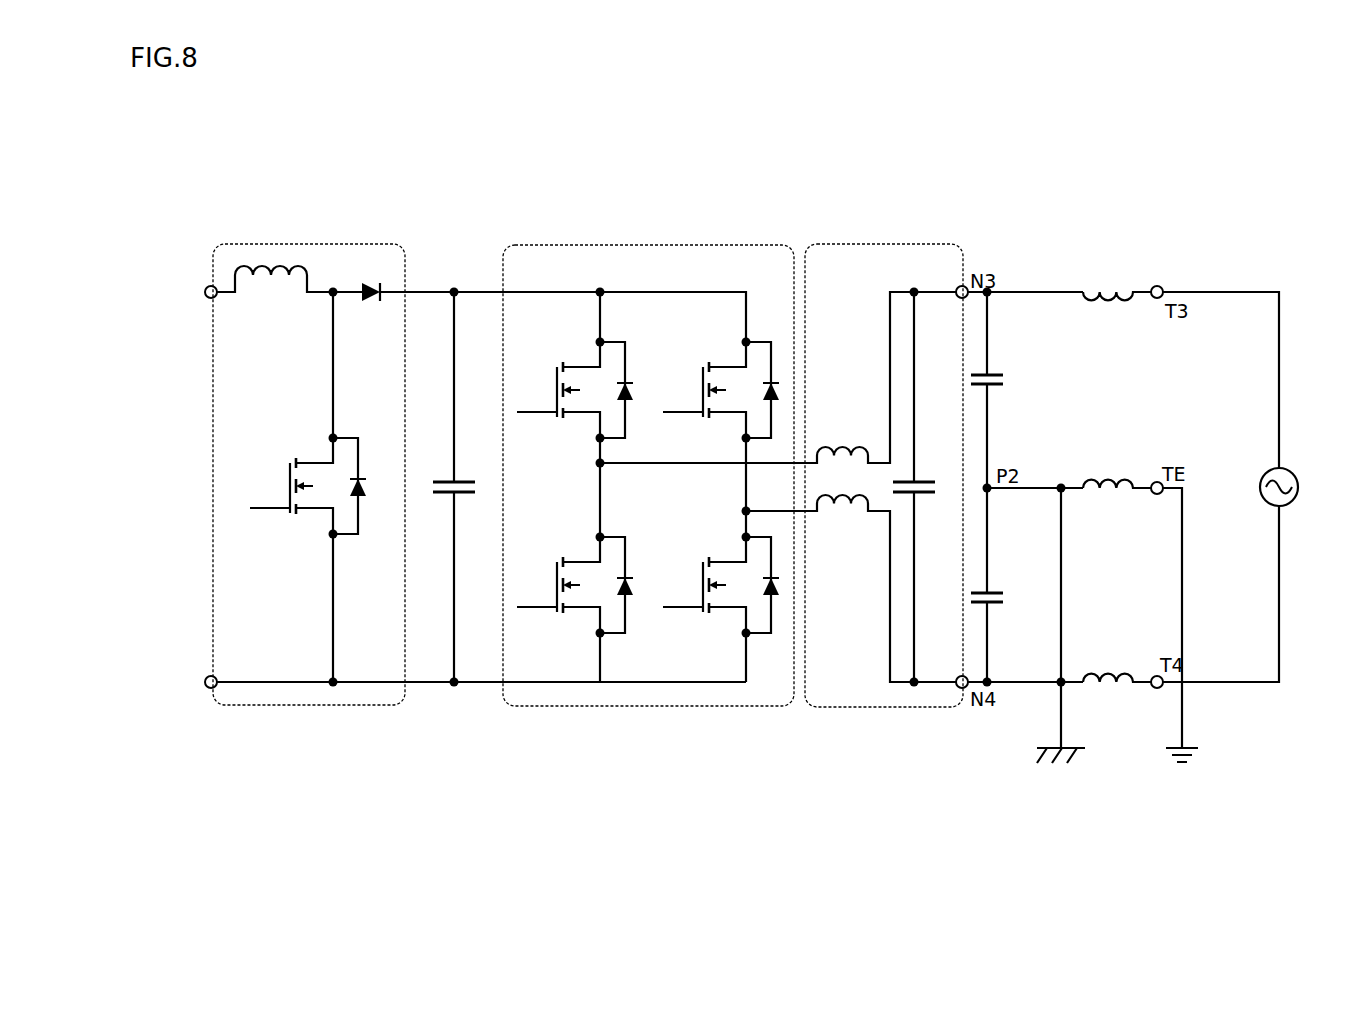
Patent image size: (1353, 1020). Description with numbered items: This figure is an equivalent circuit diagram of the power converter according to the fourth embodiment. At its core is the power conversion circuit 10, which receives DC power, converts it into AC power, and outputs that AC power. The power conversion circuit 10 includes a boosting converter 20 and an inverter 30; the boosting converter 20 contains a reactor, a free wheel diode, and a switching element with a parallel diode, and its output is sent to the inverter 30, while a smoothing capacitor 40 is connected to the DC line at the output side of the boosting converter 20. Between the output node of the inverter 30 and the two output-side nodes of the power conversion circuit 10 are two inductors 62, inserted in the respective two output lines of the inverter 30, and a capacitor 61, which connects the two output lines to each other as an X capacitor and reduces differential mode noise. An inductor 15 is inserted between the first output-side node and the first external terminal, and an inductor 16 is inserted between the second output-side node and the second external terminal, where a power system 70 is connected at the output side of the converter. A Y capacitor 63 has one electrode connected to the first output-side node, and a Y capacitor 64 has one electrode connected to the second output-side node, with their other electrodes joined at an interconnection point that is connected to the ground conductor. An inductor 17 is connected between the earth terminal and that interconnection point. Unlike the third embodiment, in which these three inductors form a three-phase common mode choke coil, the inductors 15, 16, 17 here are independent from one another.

The power conversion circuit 10 is at (223, 213).
The boosting converter 20 is at (367, 243).
The inverter 30 is at (679, 244).
The smoothing capacitor 40 is at (465, 481).
The capacitor 61 is at (928, 481).
The inductors 62 is at (837, 438).
The Y capacitor 63 is at (995, 374).
The Y capacitor 64 is at (997, 591).
The inductor 15 is at (1107, 295).
The inductor 16 is at (1112, 685).
The inductor 17 is at (1115, 480).
The power system 70 is at (1290, 472).